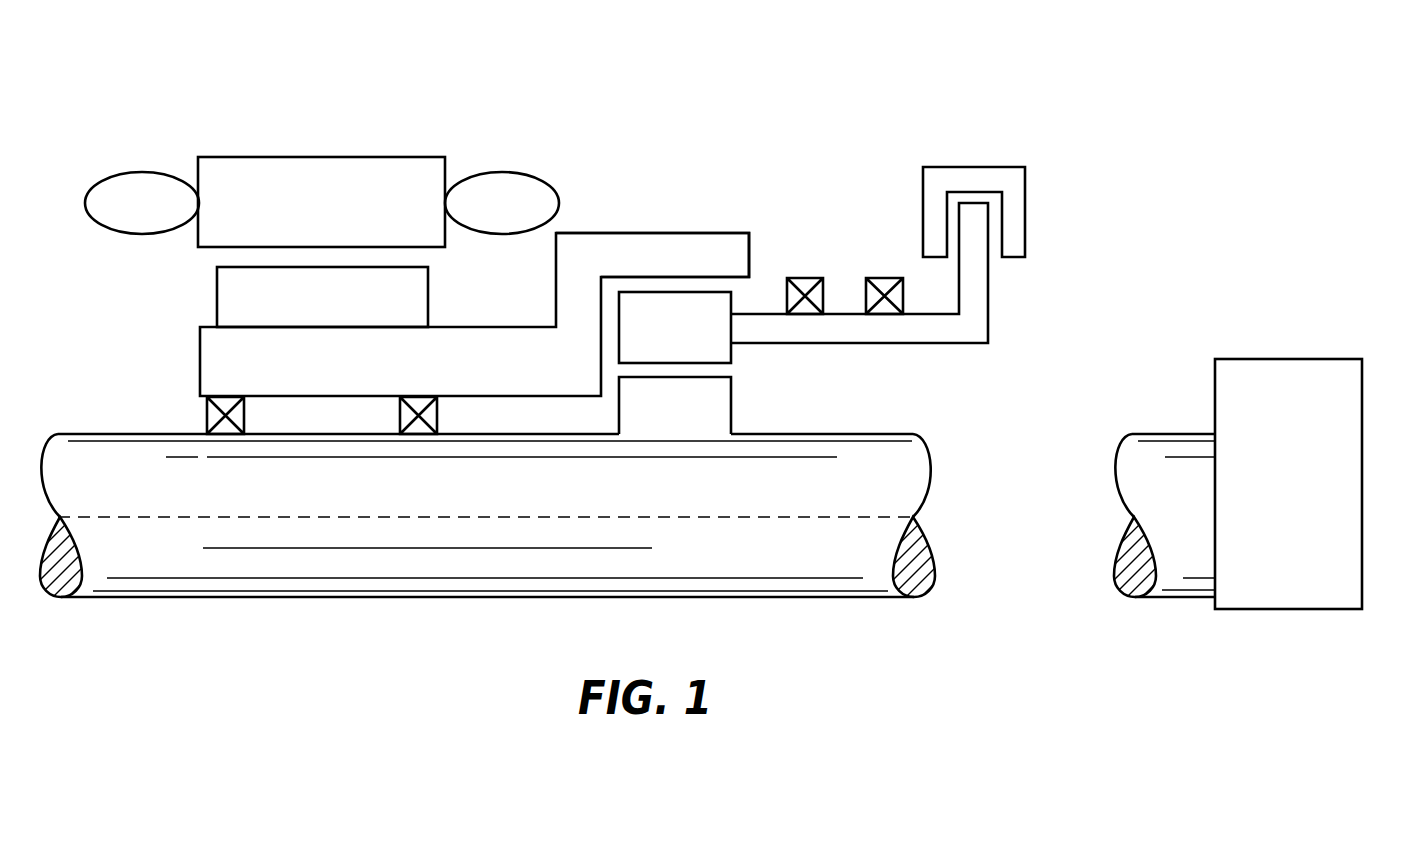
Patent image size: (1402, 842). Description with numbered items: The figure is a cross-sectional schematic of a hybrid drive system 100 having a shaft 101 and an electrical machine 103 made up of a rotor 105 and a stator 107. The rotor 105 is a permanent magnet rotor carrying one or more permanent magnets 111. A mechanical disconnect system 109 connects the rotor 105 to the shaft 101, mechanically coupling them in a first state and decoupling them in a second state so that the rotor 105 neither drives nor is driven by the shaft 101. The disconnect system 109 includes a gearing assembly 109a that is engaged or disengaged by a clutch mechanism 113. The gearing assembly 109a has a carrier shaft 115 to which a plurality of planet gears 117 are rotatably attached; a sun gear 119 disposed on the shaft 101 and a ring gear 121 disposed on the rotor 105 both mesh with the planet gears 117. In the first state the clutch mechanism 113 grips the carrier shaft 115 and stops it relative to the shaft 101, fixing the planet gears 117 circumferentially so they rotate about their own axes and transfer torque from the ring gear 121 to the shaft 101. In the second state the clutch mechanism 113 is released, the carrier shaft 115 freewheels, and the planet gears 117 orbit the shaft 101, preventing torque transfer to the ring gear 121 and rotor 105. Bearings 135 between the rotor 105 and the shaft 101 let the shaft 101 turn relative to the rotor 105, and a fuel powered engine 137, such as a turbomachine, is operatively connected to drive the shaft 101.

The hybrid drive system 100 is at (680, 91).
The shaft 101 is at (685, 572).
The electrical machine 103 is at (163, 132).
The rotor 105 is at (215, 367).
The stator 107 is at (290, 170).
The mechanical disconnect system 109 is at (748, 192).
The gearing assembly 109a is at (820, 375).
The permanent magnets 111 is at (300, 311).
The clutch mechanism 113 is at (1025, 212).
The carrier shaft 115 is at (978, 333).
The planet gears 117 is at (717, 301).
The sun gear 119 is at (731, 397).
The ring gear 121 is at (652, 238).
The bearings 135 is at (226, 430).
The fuel powered engine 137 is at (1268, 501).